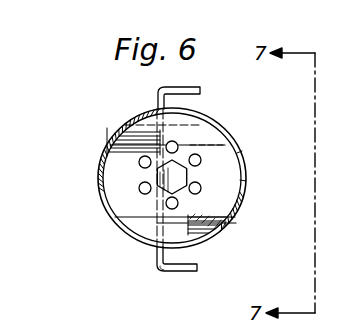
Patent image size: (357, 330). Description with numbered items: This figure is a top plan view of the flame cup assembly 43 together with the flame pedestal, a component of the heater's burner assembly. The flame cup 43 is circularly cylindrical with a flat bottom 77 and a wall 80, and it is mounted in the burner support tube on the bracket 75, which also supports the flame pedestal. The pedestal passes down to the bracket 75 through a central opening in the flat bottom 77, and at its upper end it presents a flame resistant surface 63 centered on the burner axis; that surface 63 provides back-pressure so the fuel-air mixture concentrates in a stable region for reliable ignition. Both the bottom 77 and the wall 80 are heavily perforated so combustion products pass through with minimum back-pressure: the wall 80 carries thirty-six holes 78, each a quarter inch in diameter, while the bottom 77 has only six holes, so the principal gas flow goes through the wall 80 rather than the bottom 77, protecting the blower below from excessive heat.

The flame cup assembly 43 is at (120, 117).
The flame resistant surface 63 is at (178, 172).
The bracket 75 is at (157, 266).
The flat bottom 77 is at (220, 205).
The holes 78 is at (199, 183).
The wall 80 is at (100, 200).